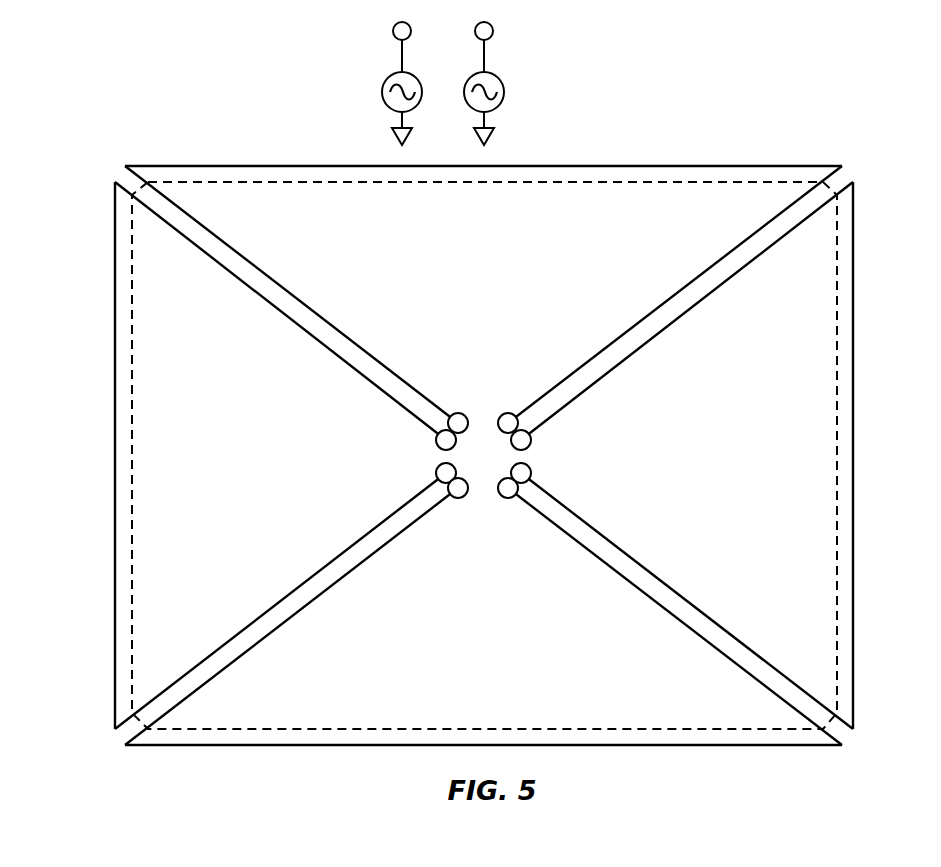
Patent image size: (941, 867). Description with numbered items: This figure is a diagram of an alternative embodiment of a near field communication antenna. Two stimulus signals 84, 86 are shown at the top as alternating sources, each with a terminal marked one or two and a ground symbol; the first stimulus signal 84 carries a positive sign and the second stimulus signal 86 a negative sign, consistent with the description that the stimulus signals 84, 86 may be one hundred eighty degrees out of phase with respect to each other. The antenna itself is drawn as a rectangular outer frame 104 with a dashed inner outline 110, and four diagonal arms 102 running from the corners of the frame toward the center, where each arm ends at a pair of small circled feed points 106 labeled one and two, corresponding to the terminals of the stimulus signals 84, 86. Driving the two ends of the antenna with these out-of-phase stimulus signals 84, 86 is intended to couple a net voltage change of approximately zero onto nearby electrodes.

The stimulus signal 84 is at (382, 89).
The stimulus signal 86 is at (504, 86).
The antenna arm 102 is at (358, 342).
The ground frame 104 is at (577, 165).
The feed point 106 is at (417, 387).
The substrate outline 110 is at (837, 297).